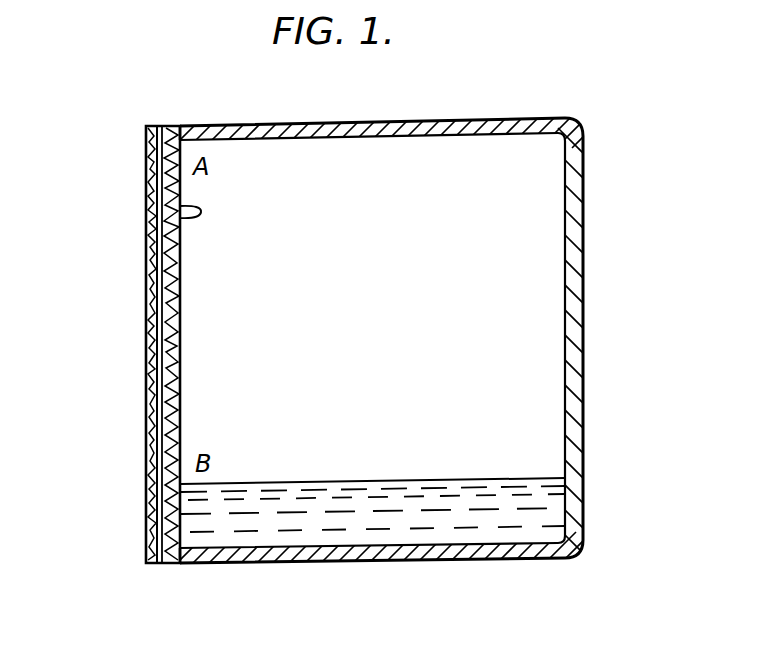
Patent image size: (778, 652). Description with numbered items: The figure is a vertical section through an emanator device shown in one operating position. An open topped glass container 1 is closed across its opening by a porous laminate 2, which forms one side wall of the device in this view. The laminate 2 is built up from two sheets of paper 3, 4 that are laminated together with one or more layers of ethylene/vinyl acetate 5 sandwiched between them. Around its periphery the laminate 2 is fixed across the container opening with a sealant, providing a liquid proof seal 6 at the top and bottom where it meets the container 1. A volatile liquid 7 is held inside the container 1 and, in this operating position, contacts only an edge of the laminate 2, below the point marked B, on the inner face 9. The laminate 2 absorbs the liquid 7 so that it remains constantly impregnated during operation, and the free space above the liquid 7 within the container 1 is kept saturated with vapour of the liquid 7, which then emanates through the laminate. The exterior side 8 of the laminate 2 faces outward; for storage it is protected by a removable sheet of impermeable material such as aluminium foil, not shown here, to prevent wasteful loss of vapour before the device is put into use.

The glass container 1 is at (586, 296).
The porous laminate 2 is at (147, 502).
The sheet of paper 3 is at (172, 292).
The sheet of paper 4 is at (152, 343).
The layer of ethylene/vinyl acetate 5 is at (158, 402).
The liquid proof seal 6 is at (182, 125).
The volatile liquid 7 is at (392, 520).
The exterior side 8 is at (150, 158).
The inner face 9 is at (180, 212).